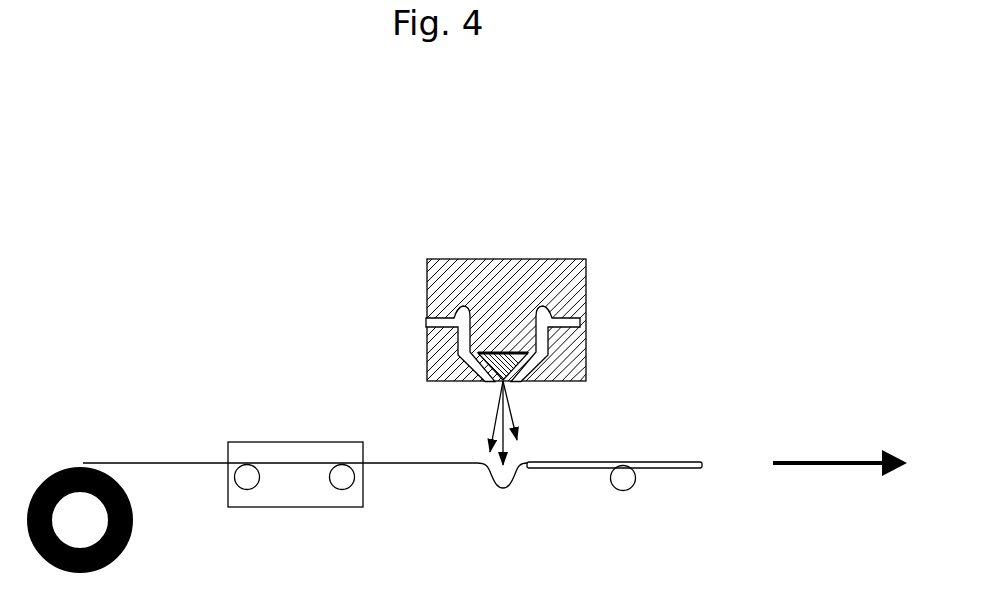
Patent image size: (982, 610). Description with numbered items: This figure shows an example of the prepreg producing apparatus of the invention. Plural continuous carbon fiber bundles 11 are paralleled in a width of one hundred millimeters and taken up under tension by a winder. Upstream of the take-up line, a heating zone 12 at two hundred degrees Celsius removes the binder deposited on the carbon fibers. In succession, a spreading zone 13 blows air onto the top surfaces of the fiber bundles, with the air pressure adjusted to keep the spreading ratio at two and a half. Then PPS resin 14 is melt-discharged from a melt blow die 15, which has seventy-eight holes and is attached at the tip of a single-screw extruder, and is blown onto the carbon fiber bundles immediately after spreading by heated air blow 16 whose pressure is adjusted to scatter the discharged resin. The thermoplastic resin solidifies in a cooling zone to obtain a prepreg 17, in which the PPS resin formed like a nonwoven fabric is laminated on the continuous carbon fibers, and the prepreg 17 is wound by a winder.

The continuous carbon fiber bundles 11 is at (115, 460).
The heating zone 12 is at (246, 441).
The spreading zone 13 is at (403, 455).
The PPS resin 14 is at (503, 348).
The melt blow die 15 is at (397, 279).
The heated air blow 16 is at (637, 322).
The prepreg 17 is at (645, 458).